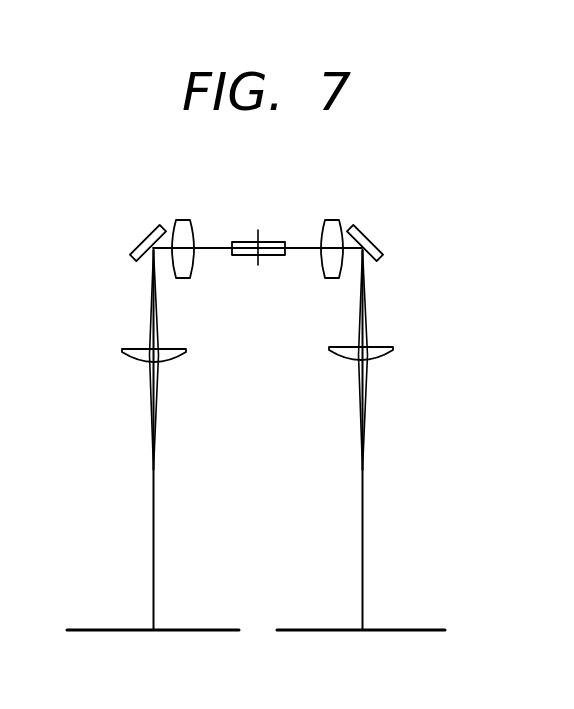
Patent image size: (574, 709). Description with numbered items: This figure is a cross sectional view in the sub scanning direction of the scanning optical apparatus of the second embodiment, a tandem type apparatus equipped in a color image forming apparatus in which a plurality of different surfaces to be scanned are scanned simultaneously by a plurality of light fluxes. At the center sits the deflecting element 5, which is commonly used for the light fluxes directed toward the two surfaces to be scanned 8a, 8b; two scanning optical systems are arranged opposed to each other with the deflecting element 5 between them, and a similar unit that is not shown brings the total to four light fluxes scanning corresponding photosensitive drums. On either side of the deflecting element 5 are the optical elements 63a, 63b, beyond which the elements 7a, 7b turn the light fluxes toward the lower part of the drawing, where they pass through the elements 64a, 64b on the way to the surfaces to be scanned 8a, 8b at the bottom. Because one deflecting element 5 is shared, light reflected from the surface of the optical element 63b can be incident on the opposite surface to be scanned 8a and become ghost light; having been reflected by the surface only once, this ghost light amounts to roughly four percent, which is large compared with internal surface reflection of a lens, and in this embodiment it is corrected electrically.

The deflecting element 5 is at (277, 258).
The optical element 63a is at (335, 218).
The optical element 63b is at (185, 218).
The mirror 7a is at (365, 232).
The mirror 7b is at (143, 235).
The condensing lens 64a is at (386, 346).
The condensing lens 64b is at (123, 347).
The surface to be scanned 8a is at (405, 628).
The surface to be scanned 8b is at (90, 628).